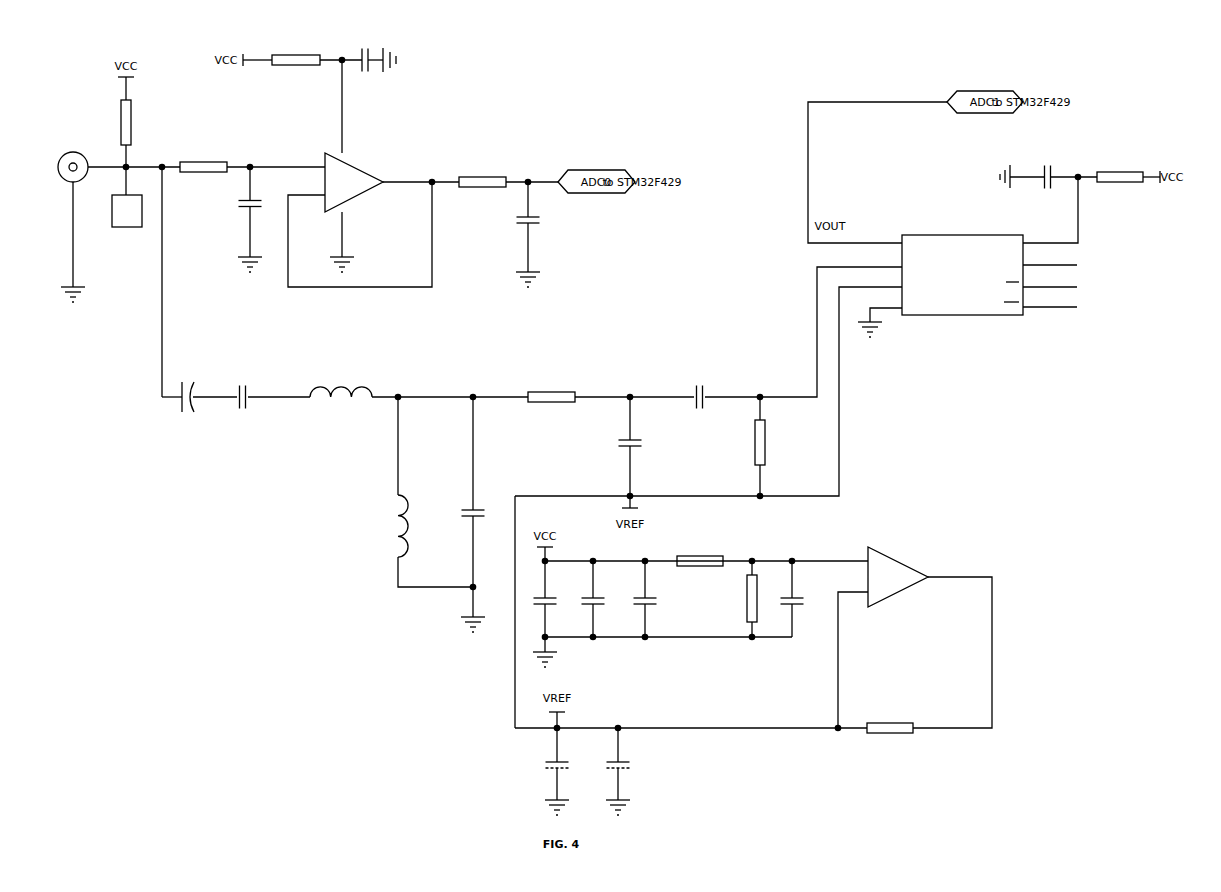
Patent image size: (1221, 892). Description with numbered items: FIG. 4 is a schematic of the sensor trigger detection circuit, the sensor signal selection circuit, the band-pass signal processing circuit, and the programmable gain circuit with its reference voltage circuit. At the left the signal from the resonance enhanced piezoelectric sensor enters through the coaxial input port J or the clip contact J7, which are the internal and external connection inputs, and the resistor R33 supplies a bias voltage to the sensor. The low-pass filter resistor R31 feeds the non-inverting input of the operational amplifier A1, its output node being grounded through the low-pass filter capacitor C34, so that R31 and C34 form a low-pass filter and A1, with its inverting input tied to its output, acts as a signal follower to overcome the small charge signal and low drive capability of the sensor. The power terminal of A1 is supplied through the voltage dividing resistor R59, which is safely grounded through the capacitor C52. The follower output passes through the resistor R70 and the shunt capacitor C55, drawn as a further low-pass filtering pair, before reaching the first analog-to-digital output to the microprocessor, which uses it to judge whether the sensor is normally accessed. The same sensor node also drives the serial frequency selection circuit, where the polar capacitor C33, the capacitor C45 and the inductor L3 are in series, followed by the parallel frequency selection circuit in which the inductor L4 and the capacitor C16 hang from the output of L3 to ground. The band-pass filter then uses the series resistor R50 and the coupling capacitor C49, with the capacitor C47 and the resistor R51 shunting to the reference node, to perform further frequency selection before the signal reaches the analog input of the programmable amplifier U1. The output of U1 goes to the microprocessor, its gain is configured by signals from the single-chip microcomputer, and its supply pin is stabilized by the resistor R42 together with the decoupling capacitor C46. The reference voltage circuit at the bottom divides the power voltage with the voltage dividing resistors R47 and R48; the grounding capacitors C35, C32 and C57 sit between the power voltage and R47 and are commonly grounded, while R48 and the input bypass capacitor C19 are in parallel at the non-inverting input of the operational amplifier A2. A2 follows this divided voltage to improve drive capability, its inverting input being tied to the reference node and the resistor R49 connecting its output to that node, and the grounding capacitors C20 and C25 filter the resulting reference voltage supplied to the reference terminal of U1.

The coaxial input port J is at (73, 216).
The clip contact J7 is at (127, 209).
The bias resistor R33 is at (139, 122).
The low-pass filter resistor R31 is at (203, 158).
The low-pass filter capacitor C34 is at (262, 219).
The operational amplifier A1 is at (360, 166).
The voltage dividing resistor R59 is at (296, 51).
The capacitor C52 is at (375, 50).
The output resistor R70 is at (482, 173).
The output filter capacitor C55 is at (540, 234).
The programmable amplifier U1 is at (977, 283).
The decoupling capacitor C46 is at (1048, 167).
The resistor R42 is at (1128, 167).
The polar capacitor C33 is at (179, 388).
The capacitor C45 is at (243, 386).
The inductor L3 is at (341, 380).
The inductor L4 is at (435, 492).
The capacitor C16 is at (485, 514).
The resistor R50 is at (551, 388).
The capacitor C47 is at (643, 446).
The coupling capacitor C49 is at (700, 387).
The resistor R51 is at (772, 446).
The grounding capacitor C35 is at (552, 614).
The grounding capacitor C32 is at (600, 599).
The grounding capacitor C57 is at (652, 599).
The voltage dividing resistor R47 is at (700, 552).
The voltage dividing resistor R48 is at (763, 599).
The input bypass capacitor C19 is at (803, 599).
The operational amplifier A2 is at (900, 575).
The resistor R49 is at (890, 718).
The reference decoupling capacitor C20 is at (569, 771).
The reference decoupling capacitor C25 is at (630, 771).